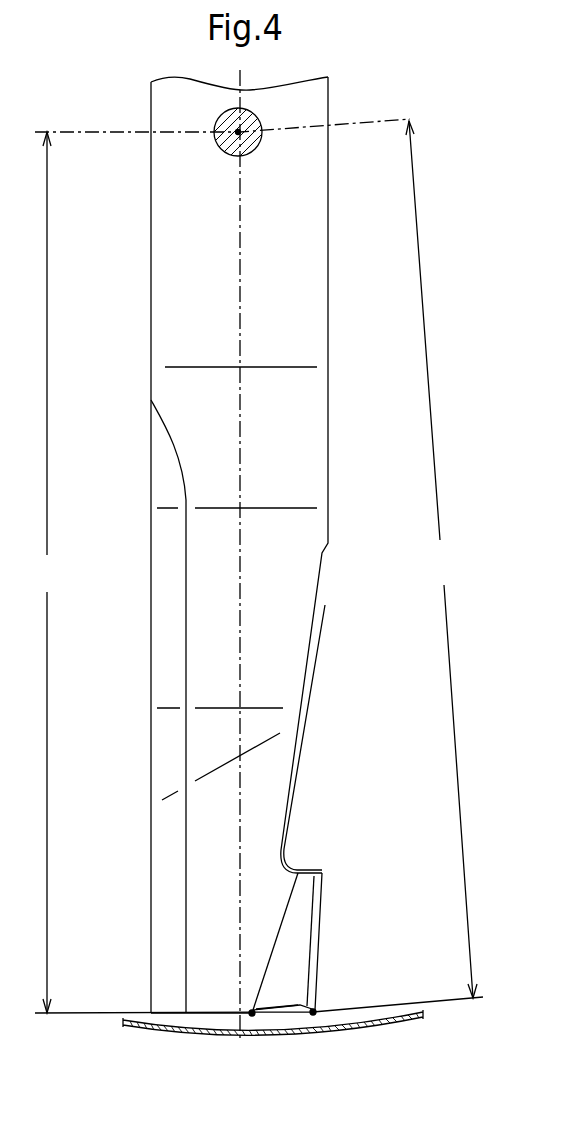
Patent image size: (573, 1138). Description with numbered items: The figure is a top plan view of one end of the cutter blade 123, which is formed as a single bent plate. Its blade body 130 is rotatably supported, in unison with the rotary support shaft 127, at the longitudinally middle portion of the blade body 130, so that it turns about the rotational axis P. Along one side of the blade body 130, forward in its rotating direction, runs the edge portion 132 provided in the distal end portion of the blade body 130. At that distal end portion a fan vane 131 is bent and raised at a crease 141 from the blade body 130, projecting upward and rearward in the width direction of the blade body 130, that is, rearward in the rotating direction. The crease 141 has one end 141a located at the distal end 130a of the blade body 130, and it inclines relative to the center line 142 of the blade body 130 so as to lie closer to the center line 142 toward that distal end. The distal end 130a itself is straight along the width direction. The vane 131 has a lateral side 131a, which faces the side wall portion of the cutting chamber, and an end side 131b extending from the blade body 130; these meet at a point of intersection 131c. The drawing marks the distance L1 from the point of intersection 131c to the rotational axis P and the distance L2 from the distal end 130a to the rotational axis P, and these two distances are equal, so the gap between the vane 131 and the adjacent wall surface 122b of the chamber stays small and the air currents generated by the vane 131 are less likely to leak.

The cutter blade 123 is at (150, 270).
The rotary support shaft 127 is at (225, 151).
The rotational axis P is at (251, 152).
The blade body 130 is at (303, 442).
The distal end 130a is at (202, 1018).
The fan vane 131 is at (293, 937).
The lateral side 131a is at (287, 1012).
The end side 131b is at (308, 977).
The point of intersection 131c is at (322, 1014).
The edge portion 132 is at (165, 895).
The crease 141 is at (280, 932).
The one end of the crease 141a is at (252, 1016).
The center line 142 is at (238, 798).
The curved wall surface 122b is at (393, 1017).
The distance L1 is at (441, 559).
The distance L2 is at (48, 572).